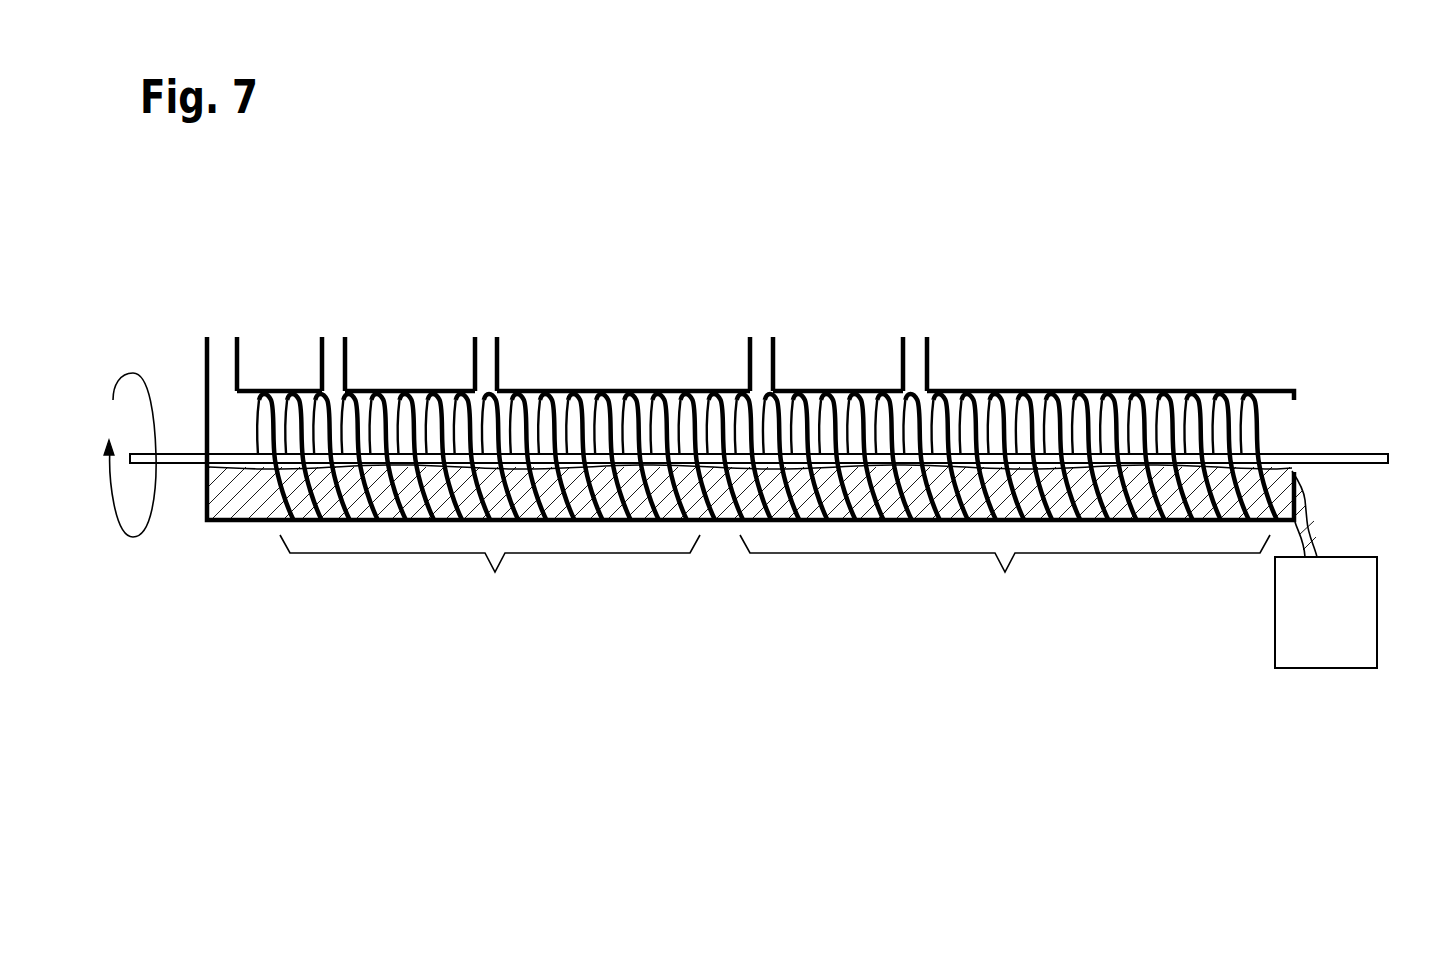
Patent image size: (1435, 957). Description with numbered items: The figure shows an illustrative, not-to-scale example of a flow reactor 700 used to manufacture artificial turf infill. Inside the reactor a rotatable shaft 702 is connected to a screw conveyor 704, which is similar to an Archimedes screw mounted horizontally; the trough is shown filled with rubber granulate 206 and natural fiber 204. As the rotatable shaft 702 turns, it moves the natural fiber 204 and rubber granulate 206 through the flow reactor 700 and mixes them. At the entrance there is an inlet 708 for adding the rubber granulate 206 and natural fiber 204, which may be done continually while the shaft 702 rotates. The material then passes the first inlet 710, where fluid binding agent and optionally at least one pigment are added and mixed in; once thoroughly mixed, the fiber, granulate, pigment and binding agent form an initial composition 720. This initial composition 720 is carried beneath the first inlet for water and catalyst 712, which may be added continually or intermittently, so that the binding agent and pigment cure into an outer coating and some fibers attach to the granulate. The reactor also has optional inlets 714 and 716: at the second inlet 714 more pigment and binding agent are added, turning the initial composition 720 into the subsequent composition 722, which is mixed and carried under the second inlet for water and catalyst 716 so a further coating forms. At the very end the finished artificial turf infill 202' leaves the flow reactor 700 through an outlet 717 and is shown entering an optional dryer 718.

The flow reactor 700 is at (1266, 388).
The rotatable shaft 702 is at (1345, 454).
The screw conveyor 704 is at (1247, 405).
The inlet 708 is at (219, 336).
The first inlet for adding fluid binding agent and pigment 710 is at (331, 336).
The first inlet for water and catalyst 712 is at (482, 336).
The second inlet for adding fluid binding agent and pigment 714 is at (758, 336).
The second inlet for water and catalyst 716 is at (912, 336).
The outlet 717 is at (1308, 491).
The dryer 718 is at (1328, 672).
The initial composition 720 is at (490, 574).
The subsequent composition 722 is at (1005, 574).
The natural fiber 204 is at (232, 497).
The rubber granulate 206 is at (232, 497).
The artificial turf infill 202' is at (1357, 537).